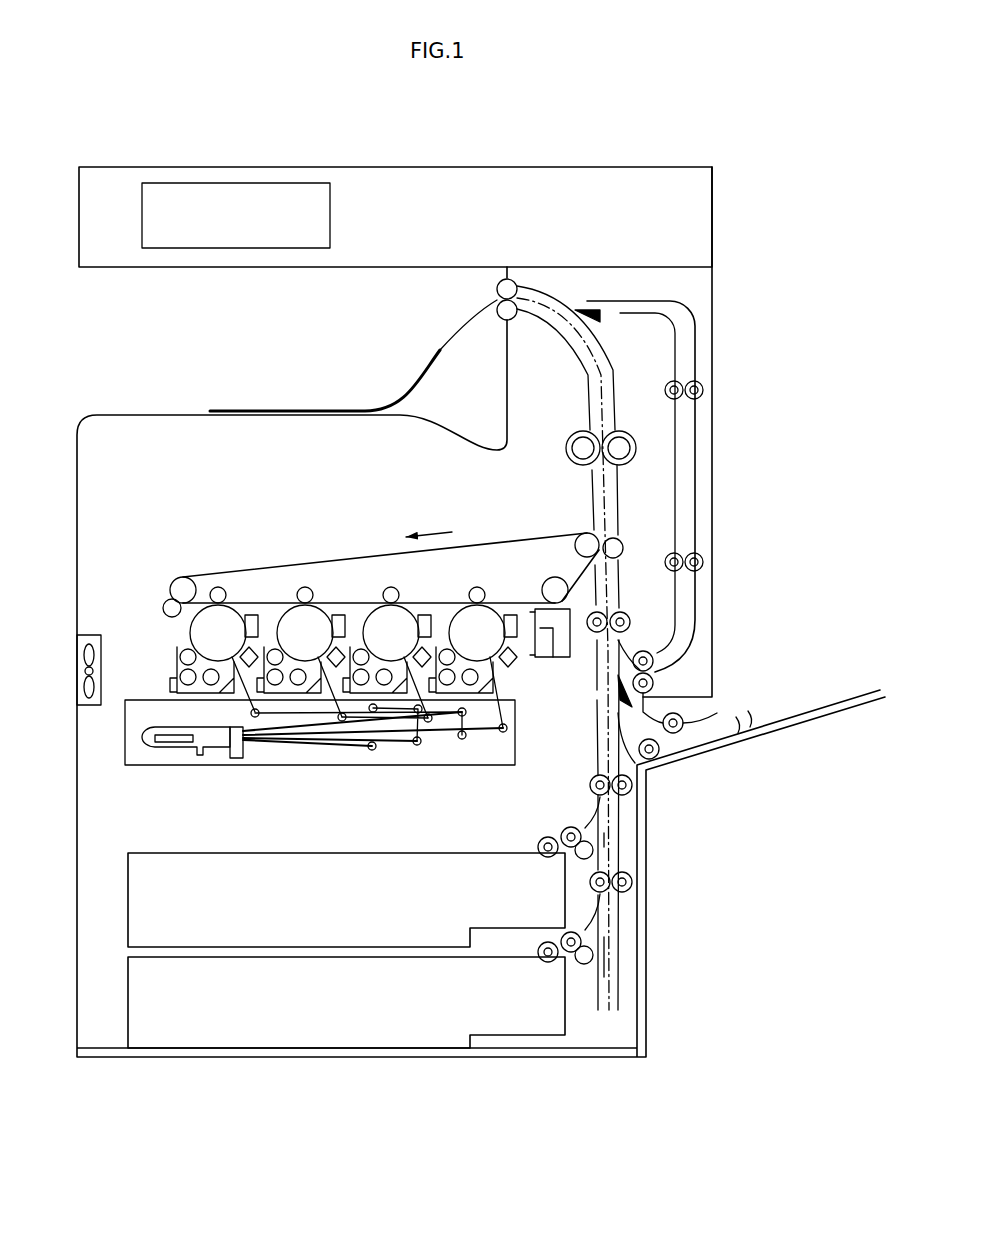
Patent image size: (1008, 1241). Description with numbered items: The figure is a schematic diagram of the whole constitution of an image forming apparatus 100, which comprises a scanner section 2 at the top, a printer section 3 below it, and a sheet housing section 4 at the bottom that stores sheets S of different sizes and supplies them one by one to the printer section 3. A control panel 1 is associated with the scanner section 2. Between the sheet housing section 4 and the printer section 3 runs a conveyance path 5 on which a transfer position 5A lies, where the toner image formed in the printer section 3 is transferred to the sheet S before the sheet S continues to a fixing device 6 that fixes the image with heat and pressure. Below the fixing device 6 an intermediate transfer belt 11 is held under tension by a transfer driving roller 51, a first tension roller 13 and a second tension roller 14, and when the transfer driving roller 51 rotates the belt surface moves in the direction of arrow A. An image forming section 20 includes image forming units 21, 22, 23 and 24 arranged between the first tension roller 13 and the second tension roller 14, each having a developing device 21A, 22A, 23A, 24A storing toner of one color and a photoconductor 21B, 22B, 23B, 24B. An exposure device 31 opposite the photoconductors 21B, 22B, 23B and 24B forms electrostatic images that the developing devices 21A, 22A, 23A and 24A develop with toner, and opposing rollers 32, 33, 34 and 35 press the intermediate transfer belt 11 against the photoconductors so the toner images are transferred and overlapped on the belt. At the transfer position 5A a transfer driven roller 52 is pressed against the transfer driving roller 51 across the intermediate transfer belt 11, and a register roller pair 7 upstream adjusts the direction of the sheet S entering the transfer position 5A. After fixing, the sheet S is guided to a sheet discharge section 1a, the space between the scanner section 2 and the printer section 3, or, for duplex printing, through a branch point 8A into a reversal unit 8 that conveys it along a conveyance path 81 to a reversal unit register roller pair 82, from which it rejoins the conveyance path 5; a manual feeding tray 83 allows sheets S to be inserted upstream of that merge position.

The image forming apparatus 100 is at (745, 235).
The control panel 1 is at (183, 183).
The sheet discharge section 1a is at (290, 372).
The scanner section 2 is at (395, 191).
The printer section 3 is at (175, 432).
The sheet housing section 4 is at (193, 851).
The conveyance path 5 is at (604, 756).
The transfer position 5A is at (602, 543).
The fixing device 6 is at (622, 412).
The register roller pair 7 is at (633, 622).
The reversal unit 8 is at (665, 470).
The branch point 8A is at (581, 300).
The conveyance path 81 is at (694, 448).
The reversal unit register roller pair 82 is at (658, 672).
The manual feeding tray 83 is at (778, 735).
The intermediate transfer belt 11 is at (391, 536).
The first tension roller 13 is at (172, 588).
The second tension roller 14 is at (557, 580).
The image forming section 20 is at (122, 630).
The image forming unit 21 is at (181, 621).
The developing device 21A is at (178, 681).
The photoconductor 21B is at (195, 630).
The image forming unit 22 is at (286, 647).
The developing device 22A is at (297, 695).
The photoconductor 22B is at (295, 620).
The image forming unit 23 is at (372, 654).
The developing device 23A is at (383, 695).
The photoconductor 23B is at (380, 620).
The image forming unit 24 is at (476, 653).
The developing device 24A is at (469, 695).
The photoconductor 24B is at (465, 620).
The exposure device 31 is at (355, 766).
The opposing roller 32 is at (216, 586).
The opposing roller 33 is at (305, 585).
The opposing roller 34 is at (391, 585).
The opposing roller 35 is at (479, 589).
The transfer driving roller 51 is at (583, 533).
The transfer driven roller 52 is at (622, 542).
The arrow A is at (430, 530).
The sheet S is at (398, 376).